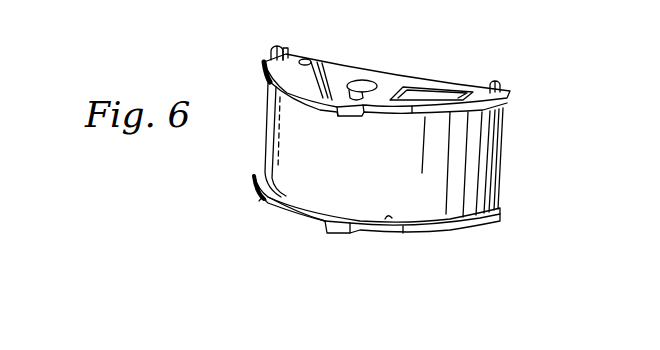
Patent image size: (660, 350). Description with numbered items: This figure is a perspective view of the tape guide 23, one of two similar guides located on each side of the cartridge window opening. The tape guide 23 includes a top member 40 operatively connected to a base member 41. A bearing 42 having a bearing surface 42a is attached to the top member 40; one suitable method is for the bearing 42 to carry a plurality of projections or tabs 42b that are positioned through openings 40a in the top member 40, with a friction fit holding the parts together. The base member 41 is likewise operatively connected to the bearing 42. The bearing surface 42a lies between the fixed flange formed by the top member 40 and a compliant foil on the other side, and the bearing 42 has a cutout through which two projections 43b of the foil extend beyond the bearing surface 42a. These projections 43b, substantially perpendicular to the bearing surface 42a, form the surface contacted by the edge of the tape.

The tape guide 23 is at (268, 82).
The top member 40 is at (339, 72).
The openings 40a is at (285, 55).
The base member 41 is at (308, 225).
The bearing 42 is at (498, 157).
The bearing surface 42a is at (287, 152).
The projections or tabs 42b is at (270, 59).
The projections 43b is at (263, 202).